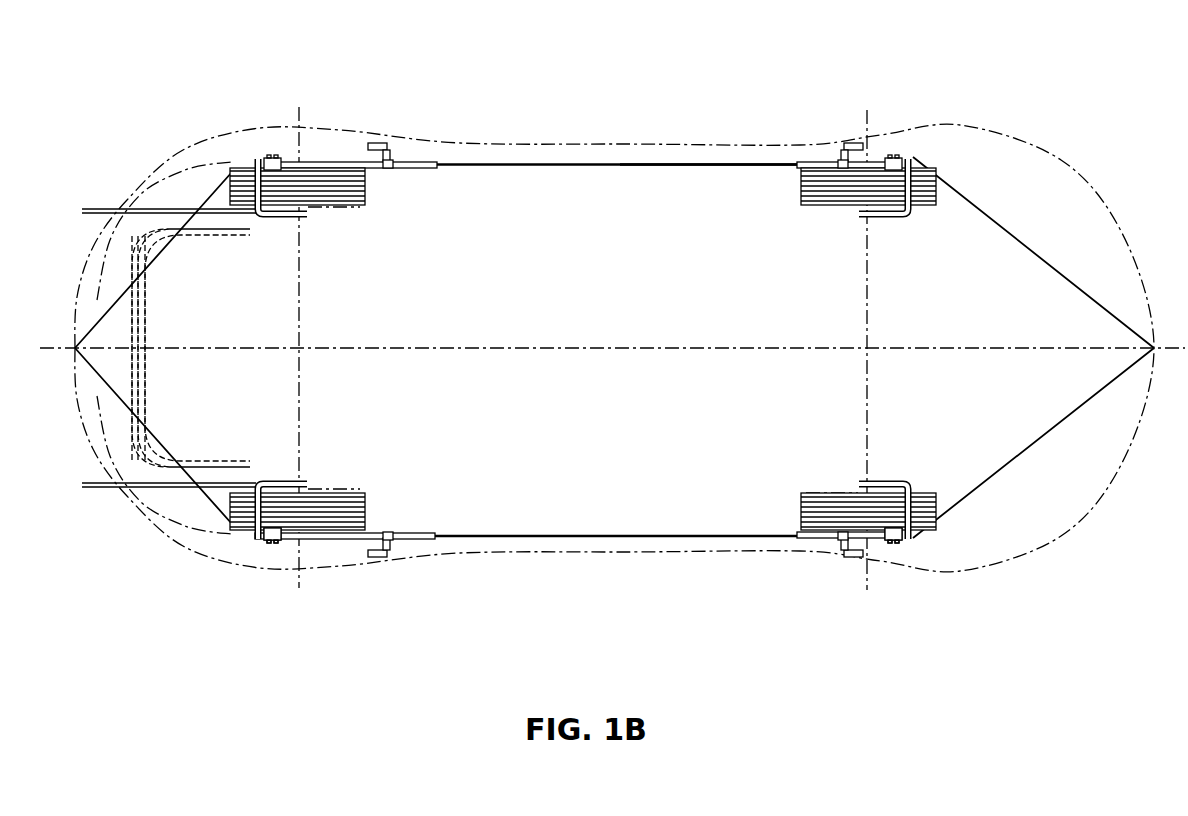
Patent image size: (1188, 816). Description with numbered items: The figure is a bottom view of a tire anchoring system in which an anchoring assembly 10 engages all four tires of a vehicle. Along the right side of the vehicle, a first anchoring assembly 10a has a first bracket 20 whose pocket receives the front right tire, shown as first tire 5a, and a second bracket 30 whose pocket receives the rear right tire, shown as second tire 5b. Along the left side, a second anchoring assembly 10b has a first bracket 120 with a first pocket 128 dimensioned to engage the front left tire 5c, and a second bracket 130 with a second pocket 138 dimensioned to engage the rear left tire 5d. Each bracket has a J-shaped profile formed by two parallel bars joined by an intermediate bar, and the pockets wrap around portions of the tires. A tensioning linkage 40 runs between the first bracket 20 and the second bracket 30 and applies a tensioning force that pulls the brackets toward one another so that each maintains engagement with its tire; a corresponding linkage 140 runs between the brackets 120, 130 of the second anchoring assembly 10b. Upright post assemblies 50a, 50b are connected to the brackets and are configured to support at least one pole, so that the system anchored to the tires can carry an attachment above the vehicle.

The anchoring assembly 10 is at (534, 148).
The first anchoring assembly 10a is at (742, 163).
The second anchoring assembly 10b is at (697, 539).
The tensioning linkage 40 is at (670, 163).
The rear rail member 140 is at (592, 539).
The first tire 5a is at (337, 185).
The second tire 5b is at (835, 185).
The front left tire 5c is at (340, 507).
The rear left tire 5d is at (822, 513).
The first bracket 20 is at (288, 146).
The second bracket 30 is at (885, 143).
The first bracket 120 is at (268, 556).
The second bracket 130 is at (892, 560).
The first pocket 128 is at (280, 485).
The second pocket 138 is at (880, 505).
The upright post assembly 50a is at (392, 150).
The upright post assembly 50b is at (848, 142).